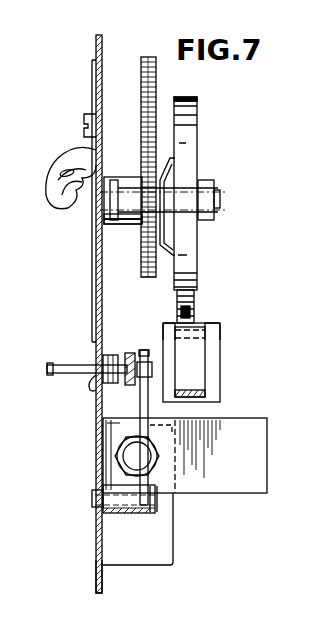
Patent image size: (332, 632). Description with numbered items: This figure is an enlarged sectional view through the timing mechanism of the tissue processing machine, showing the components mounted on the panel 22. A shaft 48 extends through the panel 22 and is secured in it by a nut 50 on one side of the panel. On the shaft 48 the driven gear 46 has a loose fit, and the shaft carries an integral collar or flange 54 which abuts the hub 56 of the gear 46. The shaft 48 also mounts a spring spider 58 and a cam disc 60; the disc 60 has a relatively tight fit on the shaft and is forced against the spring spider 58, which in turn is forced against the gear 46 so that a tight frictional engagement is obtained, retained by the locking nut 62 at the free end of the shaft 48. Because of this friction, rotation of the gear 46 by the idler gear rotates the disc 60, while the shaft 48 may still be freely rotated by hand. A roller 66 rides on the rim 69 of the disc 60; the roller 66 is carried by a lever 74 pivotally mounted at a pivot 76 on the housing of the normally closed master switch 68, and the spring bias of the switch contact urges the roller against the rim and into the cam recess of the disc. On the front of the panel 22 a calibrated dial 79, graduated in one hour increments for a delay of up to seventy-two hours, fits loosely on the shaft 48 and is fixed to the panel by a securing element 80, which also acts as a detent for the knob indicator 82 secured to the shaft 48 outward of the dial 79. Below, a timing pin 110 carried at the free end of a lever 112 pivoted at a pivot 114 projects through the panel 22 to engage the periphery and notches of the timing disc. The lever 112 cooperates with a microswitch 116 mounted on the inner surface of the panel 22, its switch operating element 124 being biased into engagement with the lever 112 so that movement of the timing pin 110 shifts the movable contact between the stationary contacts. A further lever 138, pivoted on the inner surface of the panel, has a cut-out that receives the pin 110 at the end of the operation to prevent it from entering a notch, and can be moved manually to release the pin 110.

The panel 22 is at (104, 582).
The driven gear 46 is at (147, 57).
The shaft 48 is at (228, 201).
The nut 50 is at (105, 177).
The collar or flange 54 is at (112, 225).
The hub 56 is at (126, 178).
The spring spider 58 is at (170, 150).
The cam disc 60 is at (203, 120).
The locking nut 62 is at (204, 185).
The roller 66 is at (196, 311).
The master switch 68 is at (221, 352).
The rim 69 is at (187, 97).
The lever 74 is at (200, 393).
The pivot 76 is at (210, 325).
The calibrated dial 79 is at (95, 276).
The securing element 80 is at (81, 124).
The knob indicator 82 is at (58, 166).
The timing pin 110 is at (61, 364).
The lever 112 is at (155, 413).
The pivot 114 is at (118, 505).
The microswitch 116 is at (180, 534).
The switch operating element 124 is at (117, 450).
The lever 138 is at (130, 345).